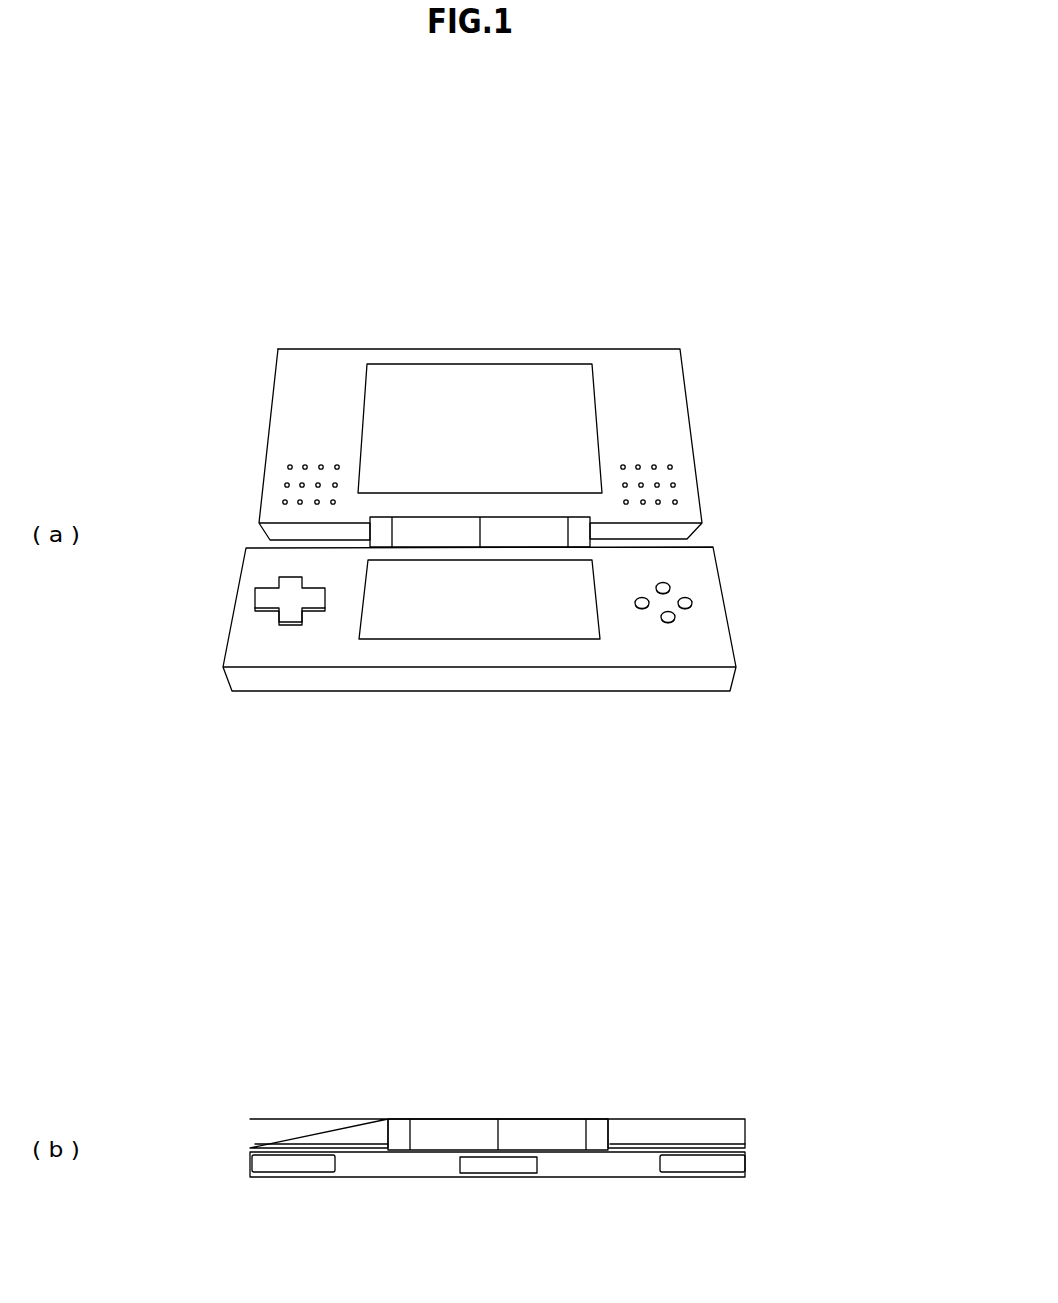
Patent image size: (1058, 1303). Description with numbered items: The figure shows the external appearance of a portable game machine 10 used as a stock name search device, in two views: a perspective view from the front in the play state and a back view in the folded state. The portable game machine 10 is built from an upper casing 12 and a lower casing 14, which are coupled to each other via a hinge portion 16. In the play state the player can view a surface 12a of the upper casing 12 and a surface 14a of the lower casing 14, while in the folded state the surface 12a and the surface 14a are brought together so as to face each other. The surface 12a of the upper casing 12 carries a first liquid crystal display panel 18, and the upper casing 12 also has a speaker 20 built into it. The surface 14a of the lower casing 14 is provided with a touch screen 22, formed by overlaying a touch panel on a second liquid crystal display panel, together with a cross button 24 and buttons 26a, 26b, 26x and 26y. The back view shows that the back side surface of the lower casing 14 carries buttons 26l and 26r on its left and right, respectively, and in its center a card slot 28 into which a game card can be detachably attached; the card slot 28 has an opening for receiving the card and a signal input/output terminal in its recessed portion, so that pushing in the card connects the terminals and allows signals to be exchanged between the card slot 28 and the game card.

The portable game machine 10 is at (505, 260).
The upper casing 12 is at (690, 417).
The surface of the upper casing 12a is at (315, 370).
The lower casing 14 is at (730, 616).
The surface of the lower casing 14a is at (292, 648).
The hinge portion 16 is at (440, 517).
The first liquid crystal display panel 18 is at (597, 397).
The speaker 20 is at (283, 482).
The touch screen 22 is at (525, 640).
The cross button 24 is at (277, 590).
The button 26a is at (695, 600).
The button 26b is at (667, 623).
The button 26x is at (668, 583).
The button 26y is at (643, 610).
The button 26r is at (315, 1172).
The button 26l is at (705, 1163).
The card slot 28 is at (497, 1175).